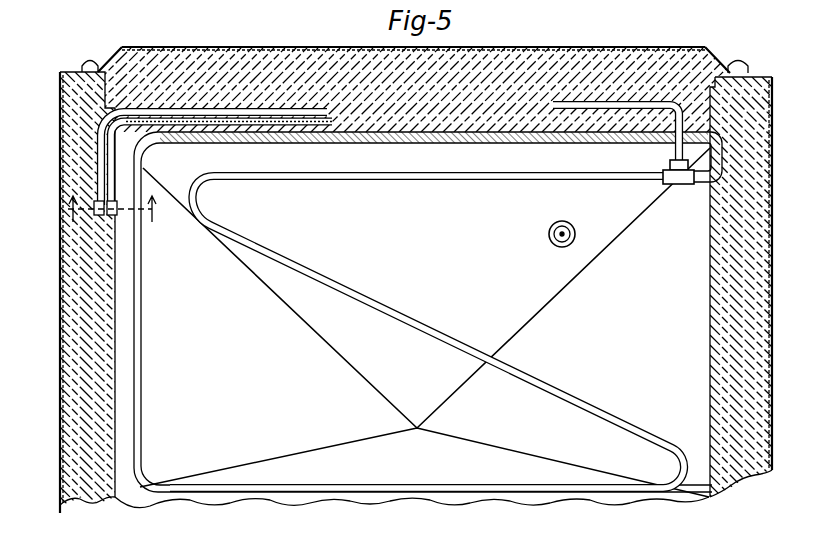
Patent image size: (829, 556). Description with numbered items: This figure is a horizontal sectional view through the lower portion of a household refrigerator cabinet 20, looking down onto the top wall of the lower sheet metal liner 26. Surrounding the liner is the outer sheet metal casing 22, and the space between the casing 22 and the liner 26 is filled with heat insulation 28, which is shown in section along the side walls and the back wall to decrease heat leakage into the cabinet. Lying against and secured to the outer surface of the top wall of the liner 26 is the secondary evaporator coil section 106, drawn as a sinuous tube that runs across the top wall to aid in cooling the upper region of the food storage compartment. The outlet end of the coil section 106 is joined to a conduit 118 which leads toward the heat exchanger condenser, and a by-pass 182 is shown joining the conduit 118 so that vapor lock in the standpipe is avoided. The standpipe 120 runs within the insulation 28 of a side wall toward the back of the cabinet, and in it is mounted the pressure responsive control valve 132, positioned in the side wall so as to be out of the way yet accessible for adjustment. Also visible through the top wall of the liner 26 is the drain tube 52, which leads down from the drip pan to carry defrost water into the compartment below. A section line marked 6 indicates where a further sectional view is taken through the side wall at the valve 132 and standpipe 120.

The cabinet 20 is at (684, 49).
The outer sheet metal casing 22 is at (62, 286).
The heat insulation 28 is at (288, 60).
The lower sheet metal liner 26 is at (708, 198).
The coil section 106 is at (318, 270).
The conduit 118 is at (660, 153).
The standpipe 120 is at (281, 118).
The pressure responsive valve 132 is at (115, 218).
The by-pass 182 is at (192, 136).
The drain tube 52 is at (574, 226).
The section line 6- 6 is at (108, 209).